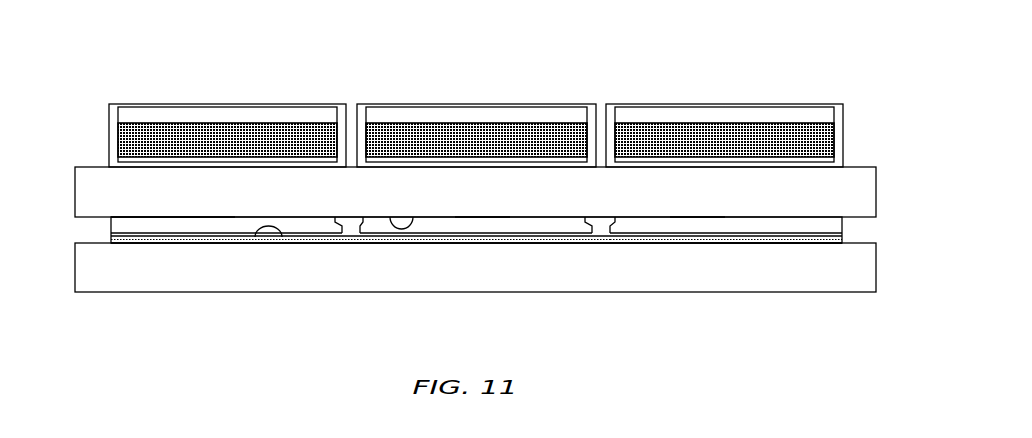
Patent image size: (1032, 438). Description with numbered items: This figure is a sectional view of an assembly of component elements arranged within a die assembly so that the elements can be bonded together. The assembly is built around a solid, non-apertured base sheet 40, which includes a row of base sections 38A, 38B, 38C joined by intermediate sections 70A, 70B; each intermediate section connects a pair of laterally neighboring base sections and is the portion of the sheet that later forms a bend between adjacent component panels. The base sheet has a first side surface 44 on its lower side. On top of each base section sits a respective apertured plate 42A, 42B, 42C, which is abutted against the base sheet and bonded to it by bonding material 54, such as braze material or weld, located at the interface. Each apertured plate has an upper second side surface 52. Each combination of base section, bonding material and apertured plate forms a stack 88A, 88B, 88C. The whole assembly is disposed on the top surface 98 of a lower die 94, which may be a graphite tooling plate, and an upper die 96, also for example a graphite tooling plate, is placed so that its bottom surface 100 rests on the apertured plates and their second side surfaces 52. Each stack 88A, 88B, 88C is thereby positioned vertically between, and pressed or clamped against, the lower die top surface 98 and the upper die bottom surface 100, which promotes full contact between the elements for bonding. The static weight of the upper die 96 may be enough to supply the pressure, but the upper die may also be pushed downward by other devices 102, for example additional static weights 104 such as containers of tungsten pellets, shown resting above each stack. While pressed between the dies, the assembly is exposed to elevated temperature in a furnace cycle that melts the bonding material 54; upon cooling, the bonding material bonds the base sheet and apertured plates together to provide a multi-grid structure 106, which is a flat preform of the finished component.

The other devices 102 is at (476, 88).
The additional static weights 104 is at (269, 97).
The upper die 96 is at (879, 192).
The lower die 94 is at (883, 275).
The stack 88A is at (482, 216).
The stack 88B is at (208, 216).
The stack 88C is at (698, 216).
The second side surface of the apertured plate 52 is at (160, 217).
The base sheet 40 is at (845, 236).
The apertured plate 42A is at (504, 215).
The apertured plate 42B is at (243, 215).
The apertured plate 42C is at (731, 215).
The intermediate section 70A is at (343, 246).
The intermediate section 70B is at (607, 246).
The bonding material 54 is at (110, 236).
The base section 38A is at (478, 246).
The base section 38B is at (207, 246).
The base section 38C is at (750, 246).
The first side surface of the base sheet base section 44 is at (143, 244).
The top surface of the lower die 98 is at (282, 237).
The bottom surface of the upper die 100 is at (413, 217).
The multi-grid structure 106 is at (814, 247).